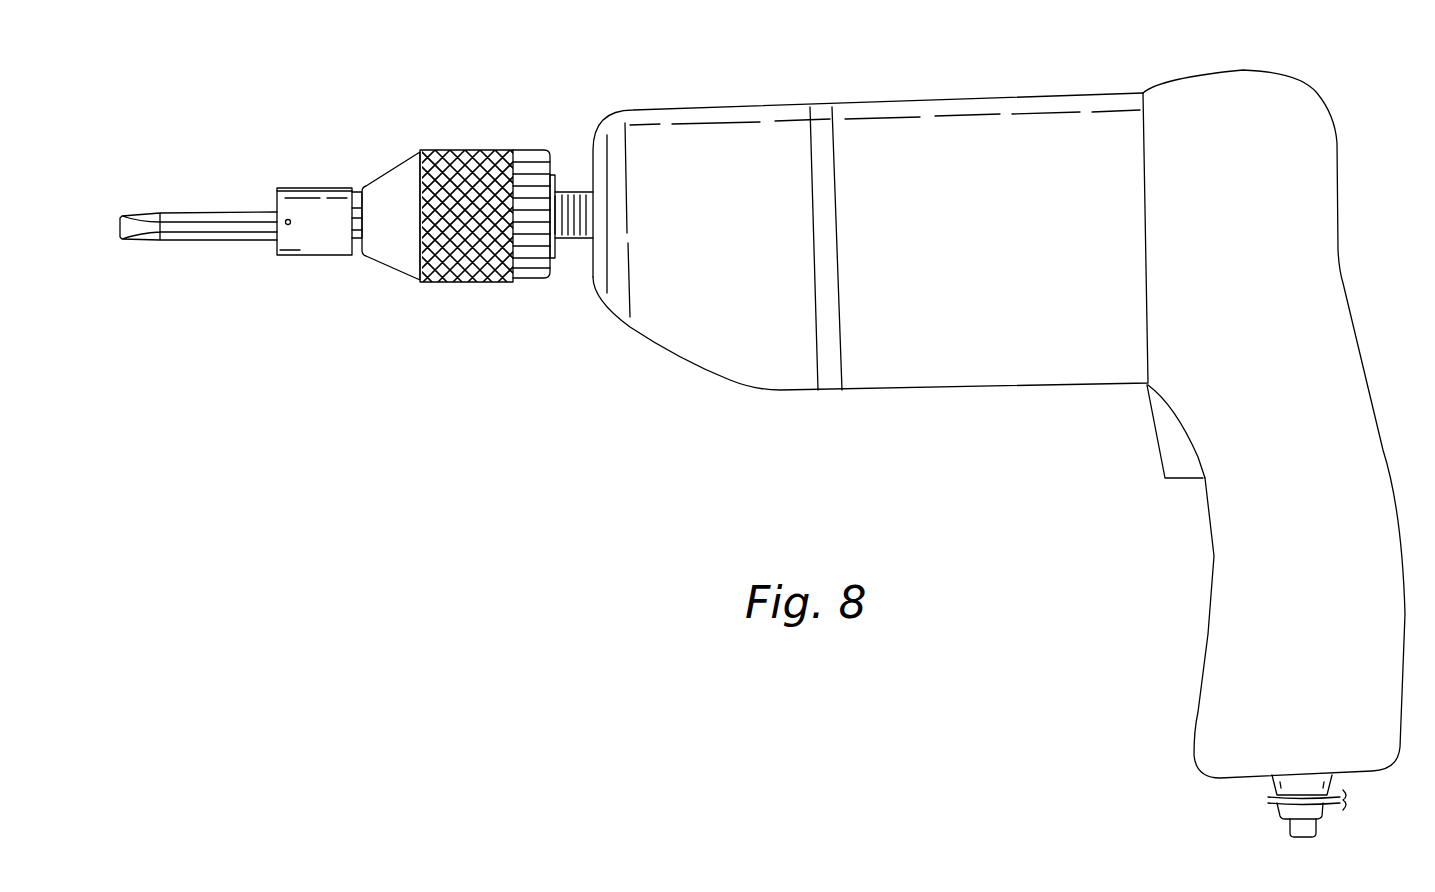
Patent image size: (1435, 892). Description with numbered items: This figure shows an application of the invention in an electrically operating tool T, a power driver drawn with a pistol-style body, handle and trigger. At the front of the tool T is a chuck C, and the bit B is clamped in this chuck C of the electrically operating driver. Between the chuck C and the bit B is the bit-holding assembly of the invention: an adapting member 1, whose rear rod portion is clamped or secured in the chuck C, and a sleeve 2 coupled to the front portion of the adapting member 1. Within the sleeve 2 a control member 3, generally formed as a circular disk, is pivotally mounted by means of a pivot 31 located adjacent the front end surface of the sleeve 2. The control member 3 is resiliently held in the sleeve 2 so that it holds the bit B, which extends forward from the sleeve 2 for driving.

The bit B is at (207, 212).
The sleeve 2 is at (323, 189).
The pivot 31 is at (291, 224).
The control member 3 is at (292, 242).
The adapting member 1 is at (357, 206).
The chuck C is at (493, 147).
The tool T is at (917, 102).